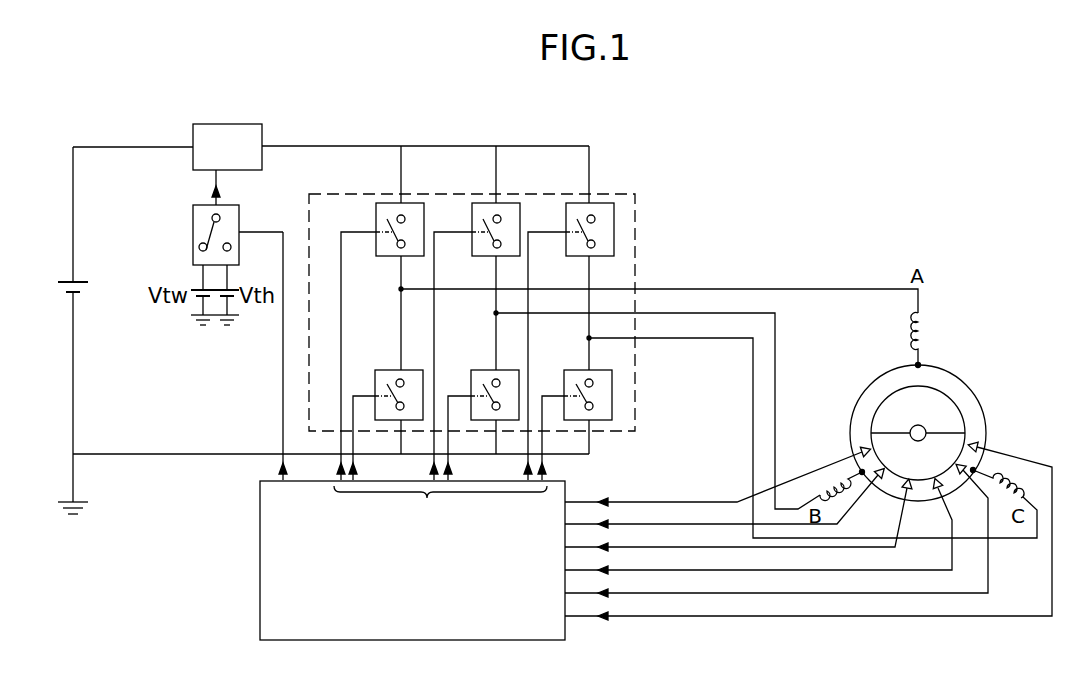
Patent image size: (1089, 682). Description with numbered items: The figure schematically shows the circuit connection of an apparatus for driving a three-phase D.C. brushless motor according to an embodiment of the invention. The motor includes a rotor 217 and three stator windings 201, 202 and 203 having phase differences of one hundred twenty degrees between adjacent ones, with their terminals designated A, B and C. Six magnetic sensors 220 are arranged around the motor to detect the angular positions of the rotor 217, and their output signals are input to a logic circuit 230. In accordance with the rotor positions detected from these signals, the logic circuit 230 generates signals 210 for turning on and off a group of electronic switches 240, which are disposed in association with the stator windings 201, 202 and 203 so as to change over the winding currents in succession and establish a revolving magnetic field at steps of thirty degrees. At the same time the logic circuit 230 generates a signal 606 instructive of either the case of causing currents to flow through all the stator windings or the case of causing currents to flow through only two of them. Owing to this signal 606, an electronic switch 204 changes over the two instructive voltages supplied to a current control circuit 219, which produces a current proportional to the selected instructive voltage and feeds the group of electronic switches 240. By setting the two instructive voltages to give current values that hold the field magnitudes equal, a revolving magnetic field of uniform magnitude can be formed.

The current control circuit 219 is at (234, 124).
The electronic switch 204 is at (193, 216).
The signal 606 is at (283, 376).
The group of electronic switches 240 is at (636, 236).
The signals 210 is at (443, 382).
The logic circuit 230 is at (260, 593).
The stator winding 201 is at (928, 332).
The stator winding 202 is at (823, 478).
The stator winding 203 is at (990, 466).
The rotor 217 is at (955, 398).
The magnetic sensors 220 is at (856, 446).